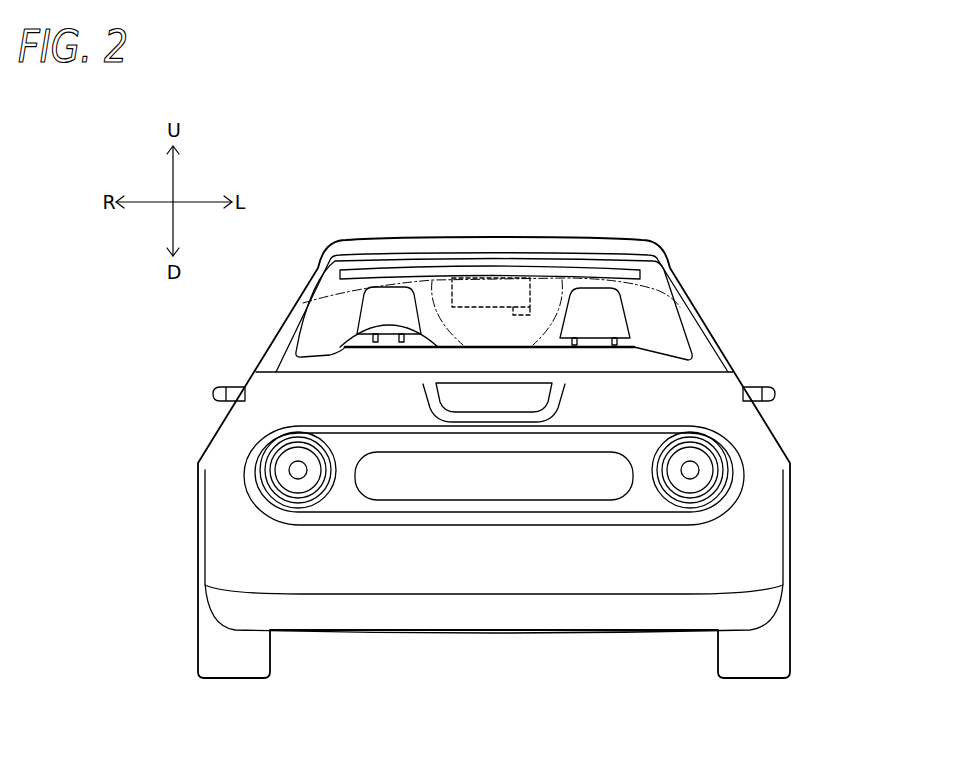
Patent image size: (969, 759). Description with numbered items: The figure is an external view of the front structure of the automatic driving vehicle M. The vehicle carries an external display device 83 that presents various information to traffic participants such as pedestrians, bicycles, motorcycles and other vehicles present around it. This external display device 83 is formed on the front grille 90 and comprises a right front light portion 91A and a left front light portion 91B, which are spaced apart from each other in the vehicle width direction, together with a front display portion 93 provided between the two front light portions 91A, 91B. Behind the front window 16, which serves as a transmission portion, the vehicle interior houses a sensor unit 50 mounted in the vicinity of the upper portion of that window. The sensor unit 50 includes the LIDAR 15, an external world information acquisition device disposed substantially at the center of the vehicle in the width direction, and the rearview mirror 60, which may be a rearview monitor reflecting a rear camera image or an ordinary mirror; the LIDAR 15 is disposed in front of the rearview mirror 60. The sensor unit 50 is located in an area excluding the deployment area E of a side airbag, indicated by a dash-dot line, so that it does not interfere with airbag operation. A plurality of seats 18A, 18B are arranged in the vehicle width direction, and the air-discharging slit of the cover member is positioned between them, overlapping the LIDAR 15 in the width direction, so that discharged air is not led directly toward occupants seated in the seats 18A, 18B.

The automatic driving vehicle M is at (708, 271).
The deployment area of side airbag E is at (662, 292).
The LIDAR 15 is at (497, 273).
The front window 16 is at (673, 327).
The seat 18A is at (390, 304).
The seat 18B is at (594, 304).
The sensor unit 50 is at (560, 247).
The rearview mirror 60 is at (553, 283).
The external display device 83 is at (495, 394).
The front grille 90 is at (350, 447).
The right front light portion 91A is at (247, 477).
The left front light portion 91B is at (741, 477).
The front display portion 93 is at (377, 463).